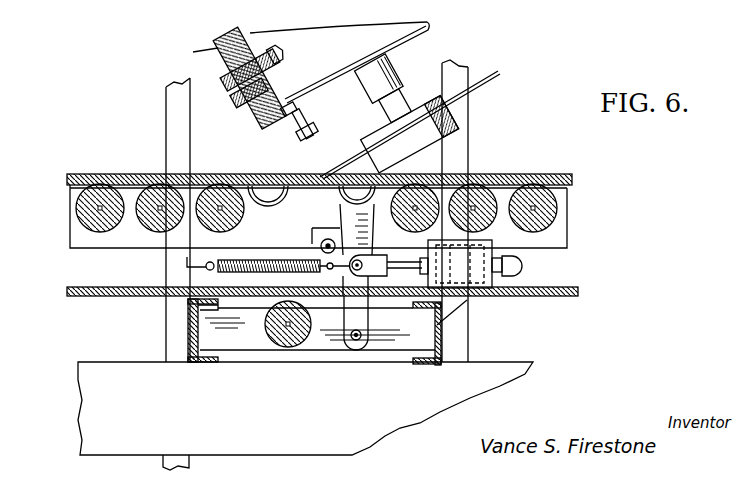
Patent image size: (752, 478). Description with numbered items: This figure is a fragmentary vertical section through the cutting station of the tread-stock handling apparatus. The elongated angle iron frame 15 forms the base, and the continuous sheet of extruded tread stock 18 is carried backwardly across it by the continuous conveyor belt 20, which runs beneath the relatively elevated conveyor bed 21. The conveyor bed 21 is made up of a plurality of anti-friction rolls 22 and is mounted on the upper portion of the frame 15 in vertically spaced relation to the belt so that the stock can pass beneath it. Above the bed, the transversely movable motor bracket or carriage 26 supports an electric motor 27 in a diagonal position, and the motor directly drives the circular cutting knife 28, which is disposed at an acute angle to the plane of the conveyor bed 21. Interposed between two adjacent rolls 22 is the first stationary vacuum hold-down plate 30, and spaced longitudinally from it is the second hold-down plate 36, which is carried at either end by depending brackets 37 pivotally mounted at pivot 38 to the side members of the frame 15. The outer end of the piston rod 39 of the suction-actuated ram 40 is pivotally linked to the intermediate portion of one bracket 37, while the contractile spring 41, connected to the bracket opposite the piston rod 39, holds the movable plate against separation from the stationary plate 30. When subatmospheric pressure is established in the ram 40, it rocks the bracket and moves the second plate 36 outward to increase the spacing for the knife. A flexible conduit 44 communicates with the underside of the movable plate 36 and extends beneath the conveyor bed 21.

The angle iron frame 15 is at (140, 362).
The tread stock 18 is at (508, 178).
The conveyor belt 20 is at (100, 297).
The conveyor bed 21 is at (70, 207).
The anti-friction rolls 22 is at (577, 212).
The motor bracket or carriage 26 is at (222, 47).
The electric motor 27 is at (368, 32).
The circular cutting knife 28 is at (488, 84).
The first stationary vacuum hold-down plate 30 is at (281, 193).
The second hold-down plate 36 is at (339, 199).
The supporting and depending brackets 37 is at (373, 305).
The pivotal mounting 38 is at (352, 342).
The piston rod 39 is at (386, 255).
The suction-actuated ram 40 is at (510, 247).
The contractile spring 41 is at (252, 260).
The flexible conduit 44 is at (321, 246).